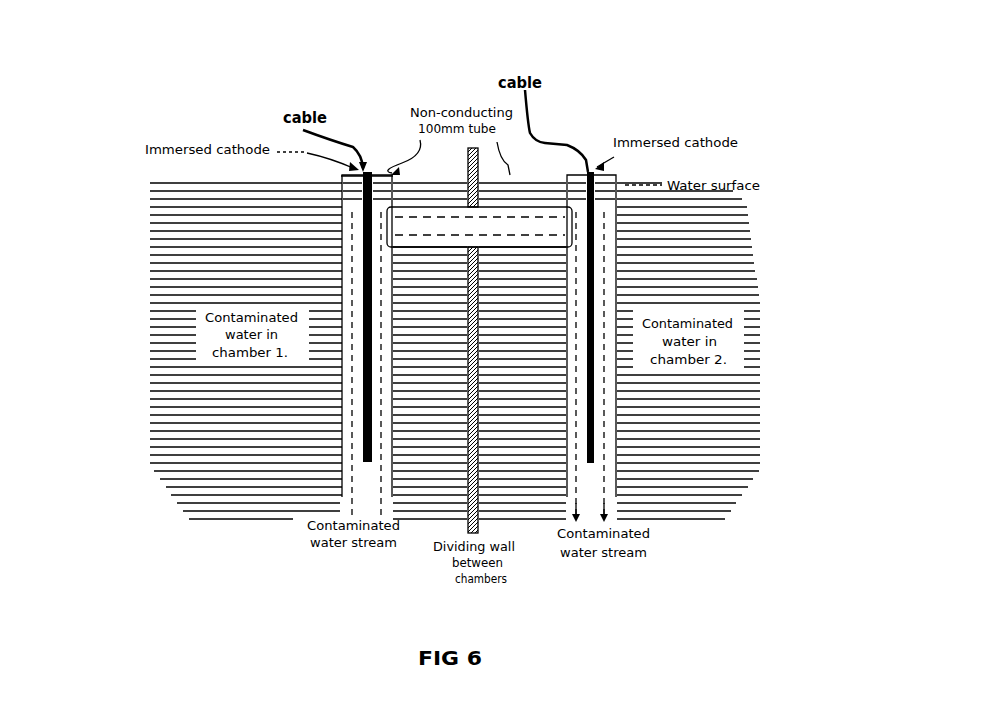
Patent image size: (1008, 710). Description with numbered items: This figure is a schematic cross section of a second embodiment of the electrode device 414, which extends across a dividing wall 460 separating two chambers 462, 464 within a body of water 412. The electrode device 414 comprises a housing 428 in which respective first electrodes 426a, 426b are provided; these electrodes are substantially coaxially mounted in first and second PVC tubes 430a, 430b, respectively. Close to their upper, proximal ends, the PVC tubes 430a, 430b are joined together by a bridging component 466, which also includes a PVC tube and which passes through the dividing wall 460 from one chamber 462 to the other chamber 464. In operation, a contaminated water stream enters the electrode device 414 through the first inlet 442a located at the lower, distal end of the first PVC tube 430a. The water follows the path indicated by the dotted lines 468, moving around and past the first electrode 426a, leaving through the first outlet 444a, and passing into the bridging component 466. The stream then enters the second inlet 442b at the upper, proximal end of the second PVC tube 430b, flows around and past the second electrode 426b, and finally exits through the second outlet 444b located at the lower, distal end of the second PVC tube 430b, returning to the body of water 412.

The body of water 412 is at (160, 180).
The electrode device 414 is at (618, 178).
The first electrode 426a is at (370, 170).
The second electrode 426b is at (590, 170).
The housing 428 is at (340, 210).
The first PVC tube 430a is at (341, 228).
The second PVC tube 430b is at (740, 215).
The first inlet 442a is at (349, 502).
The second inlet 442b is at (570, 240).
The first outlet 444a is at (363, 168).
The second outlet 444b is at (613, 502).
The dividing wall 460 is at (468, 522).
The first chamber 462 is at (157, 468).
The second chamber 464 is at (727, 282).
The bridging component 466 is at (511, 198).
The dotted lines 468 is at (380, 428).